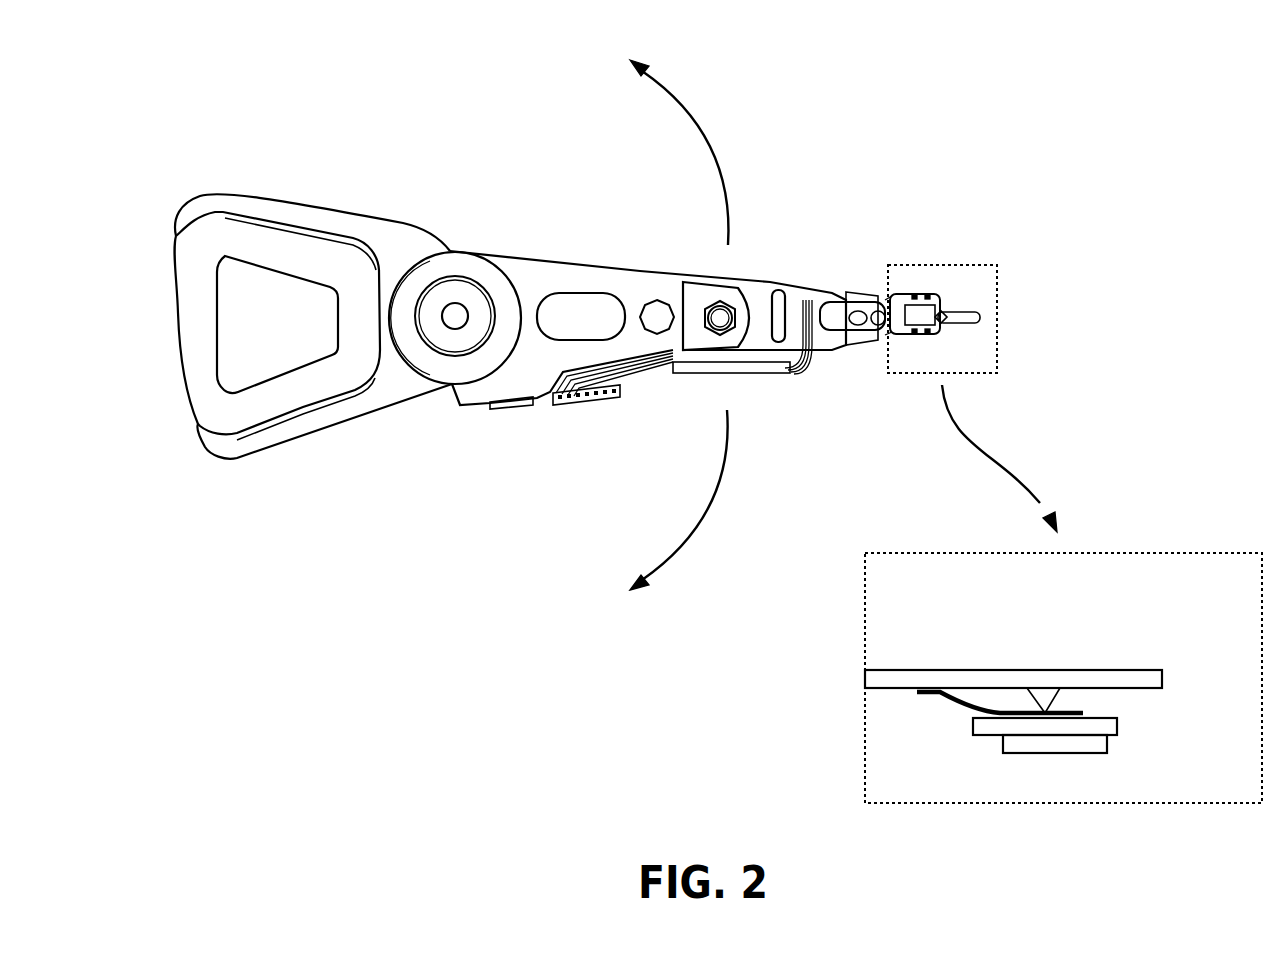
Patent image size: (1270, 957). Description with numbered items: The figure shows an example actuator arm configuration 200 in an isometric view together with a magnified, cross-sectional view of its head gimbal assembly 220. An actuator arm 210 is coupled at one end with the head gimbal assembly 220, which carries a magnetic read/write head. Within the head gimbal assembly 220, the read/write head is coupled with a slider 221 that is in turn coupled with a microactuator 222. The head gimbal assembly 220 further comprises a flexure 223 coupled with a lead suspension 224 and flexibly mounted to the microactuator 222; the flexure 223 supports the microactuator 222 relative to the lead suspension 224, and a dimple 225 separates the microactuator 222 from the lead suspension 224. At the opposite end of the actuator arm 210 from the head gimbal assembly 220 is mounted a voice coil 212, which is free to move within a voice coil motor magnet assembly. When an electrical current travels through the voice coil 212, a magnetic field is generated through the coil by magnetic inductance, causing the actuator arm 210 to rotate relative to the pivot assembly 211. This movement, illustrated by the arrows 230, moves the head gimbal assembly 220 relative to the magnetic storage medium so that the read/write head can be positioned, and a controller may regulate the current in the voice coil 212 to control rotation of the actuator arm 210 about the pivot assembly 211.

The actuator arm configuration 200 is at (334, 654).
The actuator arm 210 is at (547, 275).
The pivot assembly 211 is at (452, 272).
The voice coil 212 is at (277, 213).
The head gimbal assembly 220 is at (1178, 603).
The slider 221 is at (1100, 757).
The microactuator 222 is at (1122, 727).
The flexure 223 is at (950, 703).
The lead suspension 224 is at (1022, 668).
The dimple 225 is at (1047, 697).
The arrows 230 is at (717, 157).